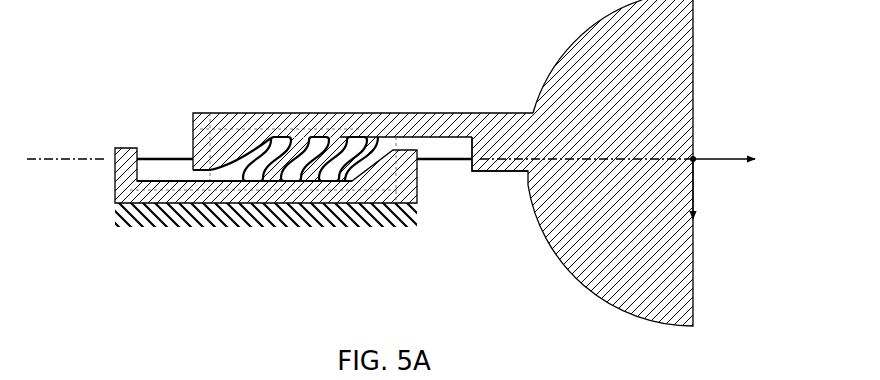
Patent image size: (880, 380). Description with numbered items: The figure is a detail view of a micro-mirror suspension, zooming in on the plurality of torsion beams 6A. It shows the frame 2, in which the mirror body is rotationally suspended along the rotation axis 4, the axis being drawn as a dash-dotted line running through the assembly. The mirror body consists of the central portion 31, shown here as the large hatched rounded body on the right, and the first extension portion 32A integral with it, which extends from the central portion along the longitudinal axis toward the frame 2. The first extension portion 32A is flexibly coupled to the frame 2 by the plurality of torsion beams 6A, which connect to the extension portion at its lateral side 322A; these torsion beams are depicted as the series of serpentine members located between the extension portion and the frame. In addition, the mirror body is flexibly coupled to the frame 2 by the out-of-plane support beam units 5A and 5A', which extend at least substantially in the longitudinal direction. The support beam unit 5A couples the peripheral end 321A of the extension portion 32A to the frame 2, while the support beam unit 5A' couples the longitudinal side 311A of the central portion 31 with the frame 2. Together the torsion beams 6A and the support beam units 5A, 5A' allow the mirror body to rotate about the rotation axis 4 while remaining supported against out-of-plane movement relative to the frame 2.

The frame 2 is at (155, 201).
The rotation axis 4 is at (59, 172).
The out-of-plane support beam unit 5A is at (129, 92).
The out-of-plane support beam unit 5A' is at (457, 215).
The plurality of torsion beams 6A is at (252, 198).
The central portion 31 is at (610, 278).
The first extension portion 32A is at (300, 108).
The peripheral end of the first extension portion 321A is at (190, 117).
The lateral side of the first extension portion 322A is at (361, 128).
The longitudinal side of the central portion 311A is at (463, 146).